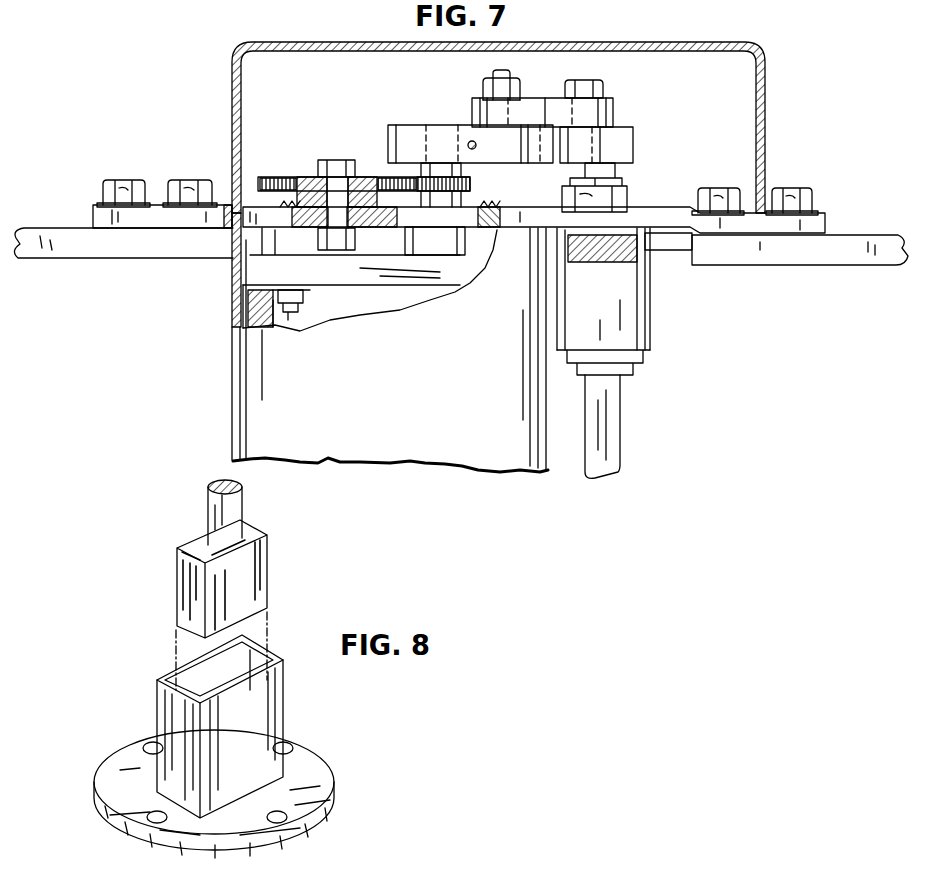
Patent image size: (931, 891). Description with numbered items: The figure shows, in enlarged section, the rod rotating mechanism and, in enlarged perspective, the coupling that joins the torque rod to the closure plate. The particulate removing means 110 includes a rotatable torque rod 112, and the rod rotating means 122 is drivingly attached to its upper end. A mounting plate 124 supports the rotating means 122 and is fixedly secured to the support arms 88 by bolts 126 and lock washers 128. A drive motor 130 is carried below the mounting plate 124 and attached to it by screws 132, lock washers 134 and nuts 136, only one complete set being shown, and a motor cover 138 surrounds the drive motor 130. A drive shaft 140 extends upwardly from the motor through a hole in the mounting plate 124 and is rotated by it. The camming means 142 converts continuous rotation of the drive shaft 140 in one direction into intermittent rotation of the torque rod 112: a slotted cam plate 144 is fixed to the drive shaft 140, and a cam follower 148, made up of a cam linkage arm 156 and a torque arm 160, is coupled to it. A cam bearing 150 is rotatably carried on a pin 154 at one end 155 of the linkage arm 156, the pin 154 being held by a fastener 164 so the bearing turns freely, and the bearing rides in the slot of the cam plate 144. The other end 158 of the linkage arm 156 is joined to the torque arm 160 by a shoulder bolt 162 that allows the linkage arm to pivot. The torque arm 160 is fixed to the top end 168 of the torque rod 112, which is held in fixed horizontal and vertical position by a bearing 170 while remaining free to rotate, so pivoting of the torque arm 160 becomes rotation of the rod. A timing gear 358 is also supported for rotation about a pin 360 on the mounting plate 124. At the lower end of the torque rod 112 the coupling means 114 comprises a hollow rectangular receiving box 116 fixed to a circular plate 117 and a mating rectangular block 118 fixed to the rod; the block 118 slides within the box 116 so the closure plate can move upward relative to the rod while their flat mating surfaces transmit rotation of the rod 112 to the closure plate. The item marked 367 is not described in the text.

In FIG. 7, the support arms 88 is at (56, 258).
In FIG. 7, the particulate removing means 110 is at (630, 484).
In FIG. 7, the torque rod 112 is at (622, 460).
In FIG. 8, the torque rod 112 is at (206, 502).
In FIG. 8, the coupling means 114 is at (234, 746).
In FIG. 8, the receiving box 116 is at (272, 706).
In FIG. 8, the circular plate 117 is at (298, 774).
In FIG. 8, the block 118 is at (256, 582).
In FIG. 7, the rod rotating means 122 is at (790, 89).
In FIG. 7, the mounting plate 124 is at (738, 235).
In FIG. 7, the bolts 126 is at (186, 180).
In FIG. 7, the lock washers 128 is at (192, 205).
In FIG. 7, the drive motor 130 is at (365, 310).
In FIG. 7, the screws 132 is at (292, 320).
In FIG. 7, the lock washers 134 is at (247, 306).
In FIG. 7, the nuts 136 is at (244, 330).
In FIG. 7, the motor cover 138 is at (236, 418).
In FIG. 7, the drive shaft 140 is at (444, 222).
In FIG. 7, the camming means 142 is at (513, 110).
In FIG. 7, the cam plate 144 is at (392, 131).
In FIG. 7, the cam follower 148 is at (620, 110).
In FIG. 7, the cam bearing 150 is at (553, 115).
In FIG. 7, the pin 154 is at (504, 78).
In FIG. 7, the end of linkage arm 155 is at (476, 110).
In FIG. 7, the cam linkage arm 156 is at (540, 98).
In FIG. 7, the other end of linkage arm 158 is at (616, 118).
In FIG. 7, the torque arm 160 is at (637, 151).
In FIG. 7, the shoulder bolt 162 is at (604, 86).
In FIG. 7, the fastener 164 is at (494, 74).
In FIG. 7, the top end of torque rod 168 is at (626, 137).
In FIG. 7, the bearing 170 is at (638, 326).
In FIG. 7, the timing gear 358 is at (268, 177).
In FIG. 7, the pin 360 is at (334, 163).
In FIG. 7, the knurled washer 367 is at (471, 184).